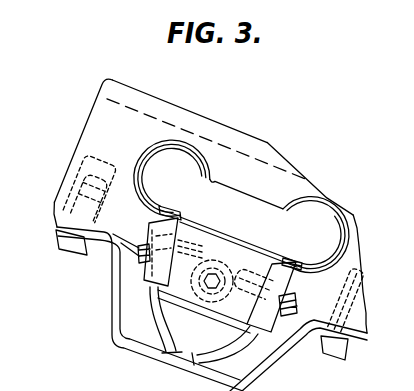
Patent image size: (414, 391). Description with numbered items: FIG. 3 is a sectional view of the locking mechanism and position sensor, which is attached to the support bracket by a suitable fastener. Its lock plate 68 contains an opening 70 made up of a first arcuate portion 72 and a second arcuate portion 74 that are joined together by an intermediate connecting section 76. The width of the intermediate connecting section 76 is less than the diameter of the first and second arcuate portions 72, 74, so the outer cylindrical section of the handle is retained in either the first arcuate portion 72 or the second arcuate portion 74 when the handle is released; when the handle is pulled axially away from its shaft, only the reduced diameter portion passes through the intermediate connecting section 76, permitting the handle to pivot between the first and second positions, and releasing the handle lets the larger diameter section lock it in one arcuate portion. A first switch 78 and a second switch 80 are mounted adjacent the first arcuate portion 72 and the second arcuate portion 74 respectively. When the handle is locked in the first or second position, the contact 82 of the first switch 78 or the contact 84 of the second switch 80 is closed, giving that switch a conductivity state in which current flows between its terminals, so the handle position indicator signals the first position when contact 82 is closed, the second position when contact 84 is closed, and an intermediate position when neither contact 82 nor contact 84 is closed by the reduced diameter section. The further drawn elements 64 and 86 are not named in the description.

The mounting bracket assembly 64 is at (210, 121).
The lock plate 68 is at (89, 114).
The opening 70 is at (275, 190).
The first arcuate portion 72 is at (181, 155).
The second arcuate portion 74 is at (340, 220).
The intermediate connecting section 76 is at (248, 197).
The first switch 78 is at (141, 253).
The second switch 80 is at (272, 328).
The contact of first switch 82 is at (162, 207).
The contact of second switch 84 is at (300, 264).
The second retaining clip 86 is at (268, 258).